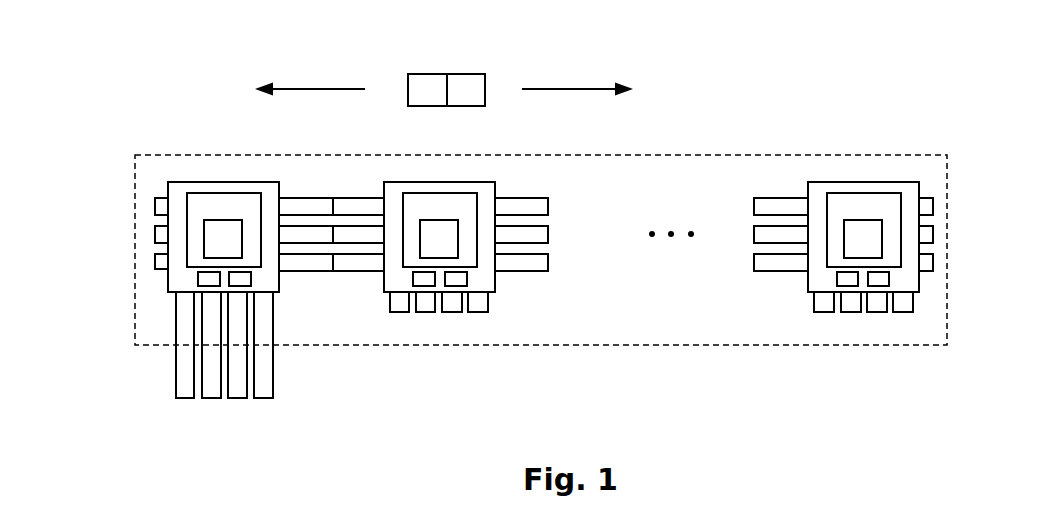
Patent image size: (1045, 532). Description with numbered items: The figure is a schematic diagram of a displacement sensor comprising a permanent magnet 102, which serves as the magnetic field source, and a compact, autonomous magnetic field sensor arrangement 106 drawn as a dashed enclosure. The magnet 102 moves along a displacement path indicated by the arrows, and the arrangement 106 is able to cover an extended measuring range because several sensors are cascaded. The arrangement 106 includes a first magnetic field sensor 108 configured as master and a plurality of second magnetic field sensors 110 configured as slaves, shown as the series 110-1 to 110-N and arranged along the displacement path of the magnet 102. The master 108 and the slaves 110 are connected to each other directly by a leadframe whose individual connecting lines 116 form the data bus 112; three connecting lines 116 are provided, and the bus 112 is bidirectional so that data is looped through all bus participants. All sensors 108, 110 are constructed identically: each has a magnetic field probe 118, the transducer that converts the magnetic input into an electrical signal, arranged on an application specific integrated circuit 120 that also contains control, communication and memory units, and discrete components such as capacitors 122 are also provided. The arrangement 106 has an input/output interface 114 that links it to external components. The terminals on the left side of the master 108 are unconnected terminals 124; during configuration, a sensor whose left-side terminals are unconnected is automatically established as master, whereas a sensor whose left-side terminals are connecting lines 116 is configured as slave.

The permanent magnet 102 is at (453, 74).
The magnetic field sensor arrangement 106 is at (748, 155).
The first magnetic field sensor 108 is at (154, 289).
The second magnetic field sensor 110 is at (490, 241).
The first second magnetic field sensor 110-1 is at (495, 282).
The Nth second magnetic field sensor 110-N is at (915, 312).
The data bus 112 is at (555, 199).
The input/output interface 114 is at (273, 403).
The connecting lines 116 is at (351, 263).
The magnetic field probe 118 is at (438, 225).
The application specific integrated circuit 120 is at (467, 225).
The capacitor 122 is at (460, 278).
The unconnected terminals 124 is at (155, 262).